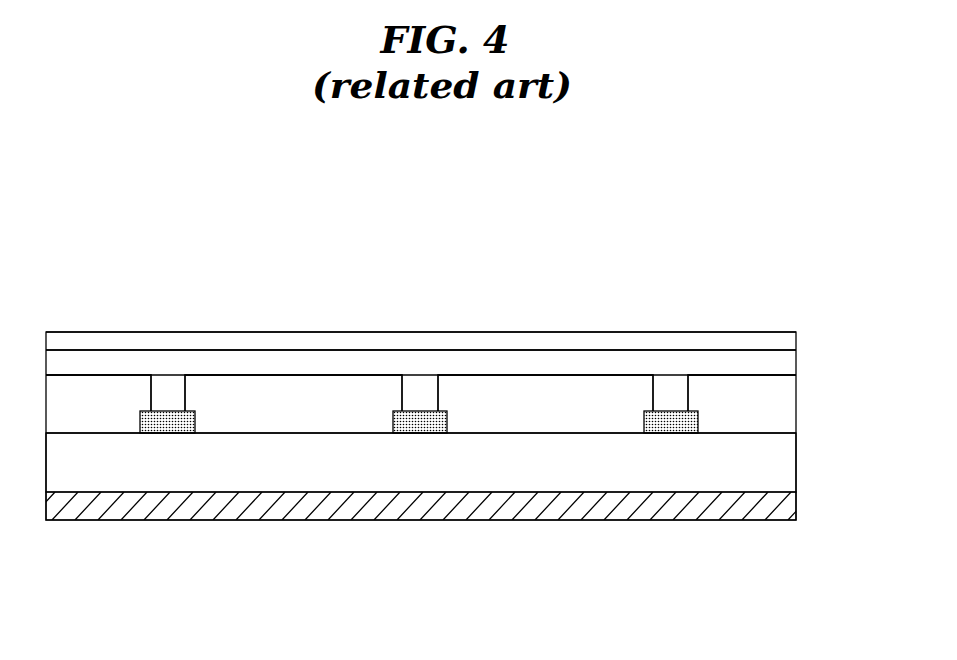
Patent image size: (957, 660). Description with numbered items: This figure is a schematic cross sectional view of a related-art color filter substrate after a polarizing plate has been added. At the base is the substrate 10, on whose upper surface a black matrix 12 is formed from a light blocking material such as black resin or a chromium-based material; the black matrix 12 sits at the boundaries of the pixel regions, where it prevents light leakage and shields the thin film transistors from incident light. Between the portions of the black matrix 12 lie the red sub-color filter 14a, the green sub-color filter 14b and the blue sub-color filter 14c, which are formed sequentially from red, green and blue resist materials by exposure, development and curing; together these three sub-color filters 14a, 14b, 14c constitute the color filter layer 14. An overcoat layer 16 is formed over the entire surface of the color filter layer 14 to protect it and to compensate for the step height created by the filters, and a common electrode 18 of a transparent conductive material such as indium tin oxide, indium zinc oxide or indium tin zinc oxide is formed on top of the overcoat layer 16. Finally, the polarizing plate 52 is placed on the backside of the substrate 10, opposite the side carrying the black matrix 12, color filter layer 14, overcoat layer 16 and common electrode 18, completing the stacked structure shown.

The substrate 10 is at (777, 462).
The black matrix 12 is at (166, 409).
The color filter layer 14 is at (358, 257).
The red sub-color filter 14a is at (343, 392).
The green sub-color filter 14b is at (508, 393).
The blue sub-color filter 14c is at (120, 392).
The overcoat layer 16 is at (267, 365).
The common electrode 18 is at (610, 343).
The polarizing plate 52 is at (695, 520).